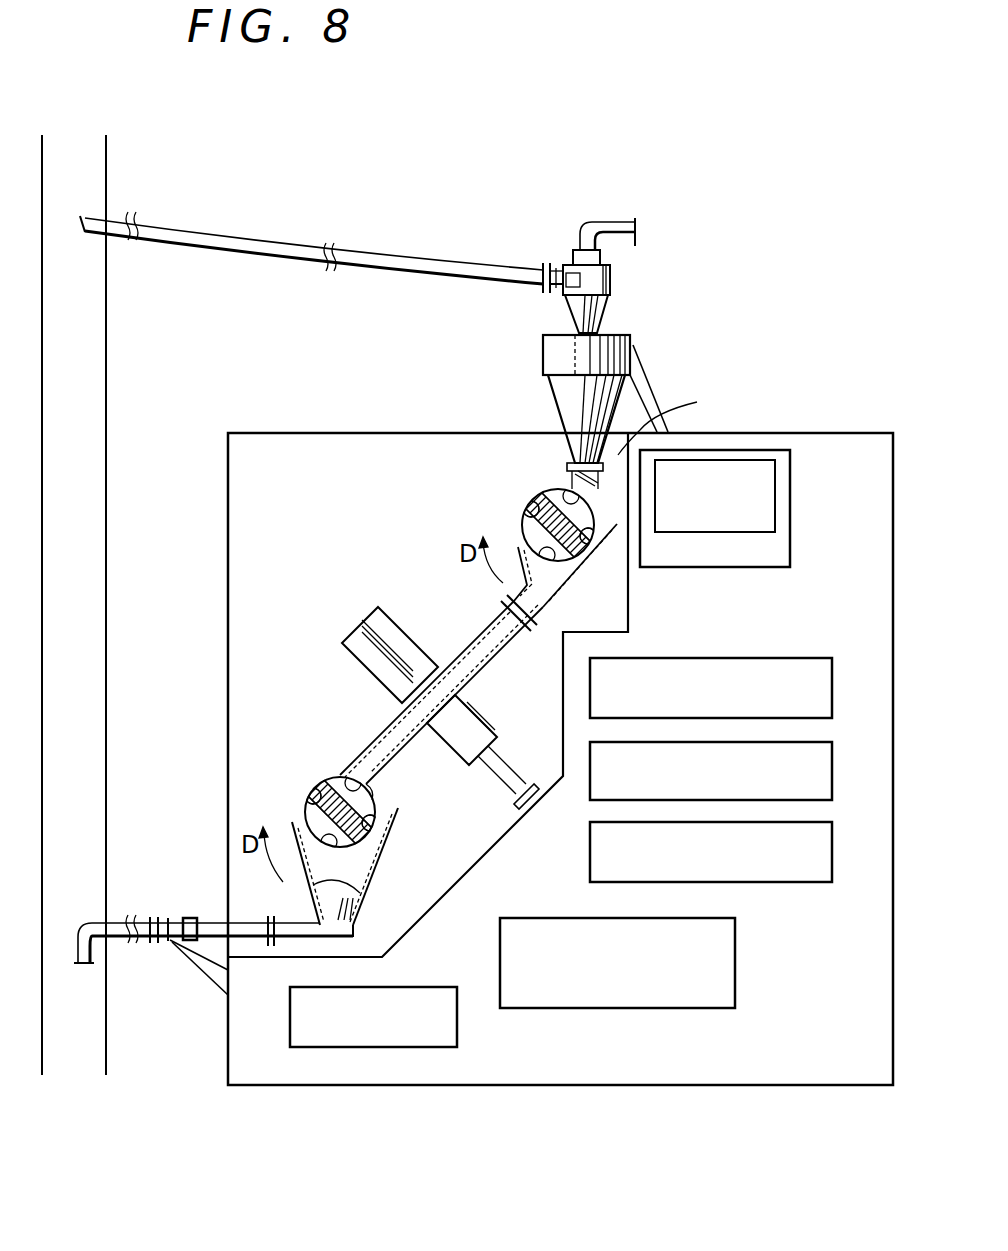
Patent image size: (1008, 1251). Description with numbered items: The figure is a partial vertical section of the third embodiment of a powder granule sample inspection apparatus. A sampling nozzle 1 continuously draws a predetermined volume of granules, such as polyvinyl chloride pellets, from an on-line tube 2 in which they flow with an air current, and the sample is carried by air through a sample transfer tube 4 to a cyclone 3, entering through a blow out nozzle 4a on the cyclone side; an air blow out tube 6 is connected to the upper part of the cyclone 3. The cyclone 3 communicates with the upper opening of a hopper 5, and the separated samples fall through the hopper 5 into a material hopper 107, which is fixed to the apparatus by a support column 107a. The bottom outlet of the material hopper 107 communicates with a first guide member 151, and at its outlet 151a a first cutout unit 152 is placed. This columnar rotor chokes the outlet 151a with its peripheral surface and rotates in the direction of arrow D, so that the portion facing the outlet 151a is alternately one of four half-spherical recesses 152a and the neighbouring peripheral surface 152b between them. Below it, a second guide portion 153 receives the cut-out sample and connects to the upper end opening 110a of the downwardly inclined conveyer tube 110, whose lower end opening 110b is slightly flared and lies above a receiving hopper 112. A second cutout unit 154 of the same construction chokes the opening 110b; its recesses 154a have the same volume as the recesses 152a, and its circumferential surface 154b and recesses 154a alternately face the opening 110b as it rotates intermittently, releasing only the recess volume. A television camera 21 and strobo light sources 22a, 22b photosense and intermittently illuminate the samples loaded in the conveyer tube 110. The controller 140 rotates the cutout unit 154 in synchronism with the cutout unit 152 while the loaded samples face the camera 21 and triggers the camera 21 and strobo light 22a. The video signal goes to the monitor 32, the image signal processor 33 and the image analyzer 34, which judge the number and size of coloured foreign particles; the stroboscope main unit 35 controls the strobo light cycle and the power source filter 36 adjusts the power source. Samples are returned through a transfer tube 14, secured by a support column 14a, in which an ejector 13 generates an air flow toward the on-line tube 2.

The sampling nozzle 1 is at (110, 230).
The on-line tube 2 is at (96, 358).
The cyclone 3 is at (612, 280).
The sample transfer tube 4 is at (412, 258).
The blow out nozzle 4a is at (560, 278).
The hopper 5 is at (605, 315).
The air blow out tube 6 is at (620, 218).
The material hopper 107 is at (543, 352).
The support column 107a is at (640, 373).
The first guide member 151 is at (575, 460).
The outlet 151a is at (602, 473).
The first cutout unit 152 is at (514, 520).
The recesses 152a is at (558, 483).
The peripheral surface 152b is at (555, 490).
The second guide portion 153 is at (562, 583).
The conveyer tube 110 is at (458, 652).
The upper end opening 110a is at (517, 613).
The lower end opening 110b is at (378, 768).
The strobo light source 22b is at (355, 635).
The television camera 21 is at (497, 747).
The strobo light source 22a is at (452, 743).
The second cutout unit 154 is at (296, 811).
The recesses 154a is at (325, 790).
The circumferential surface 154b is at (335, 777).
The receiving hopper 112 is at (360, 868).
The transfer tube 14 is at (148, 918).
The ejector 13 is at (190, 918).
The support column 14a is at (205, 975).
The monitor 32 is at (688, 555).
The image signal processor 33 is at (832, 695).
The image analyzer 34 is at (832, 780).
The stroboscope main unit 35 is at (832, 855).
The power source filter 36 is at (383, 1047).
The controller 140 is at (640, 1010).